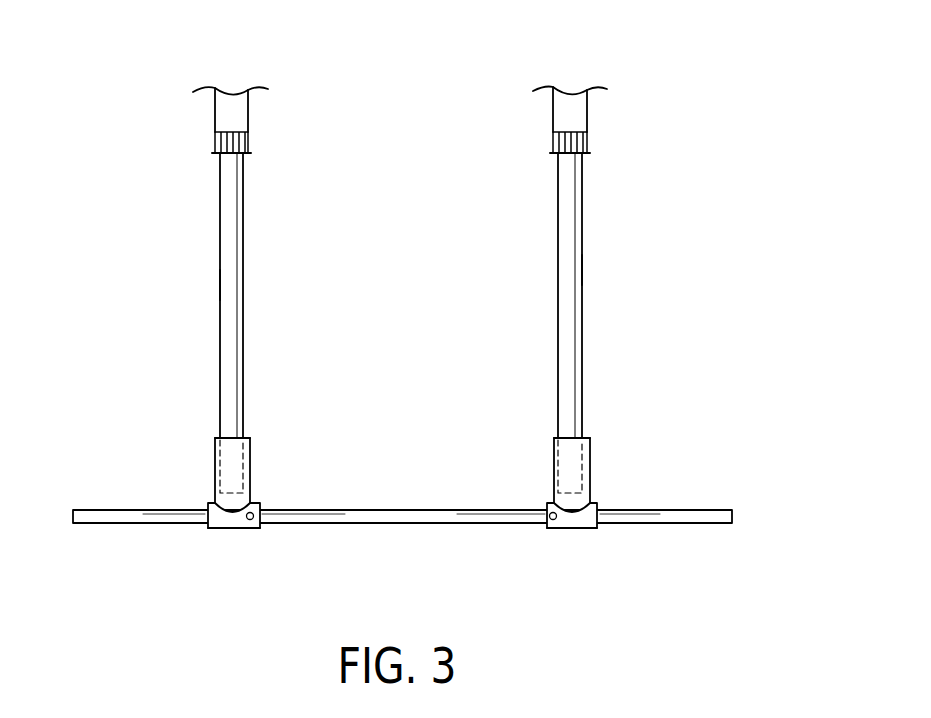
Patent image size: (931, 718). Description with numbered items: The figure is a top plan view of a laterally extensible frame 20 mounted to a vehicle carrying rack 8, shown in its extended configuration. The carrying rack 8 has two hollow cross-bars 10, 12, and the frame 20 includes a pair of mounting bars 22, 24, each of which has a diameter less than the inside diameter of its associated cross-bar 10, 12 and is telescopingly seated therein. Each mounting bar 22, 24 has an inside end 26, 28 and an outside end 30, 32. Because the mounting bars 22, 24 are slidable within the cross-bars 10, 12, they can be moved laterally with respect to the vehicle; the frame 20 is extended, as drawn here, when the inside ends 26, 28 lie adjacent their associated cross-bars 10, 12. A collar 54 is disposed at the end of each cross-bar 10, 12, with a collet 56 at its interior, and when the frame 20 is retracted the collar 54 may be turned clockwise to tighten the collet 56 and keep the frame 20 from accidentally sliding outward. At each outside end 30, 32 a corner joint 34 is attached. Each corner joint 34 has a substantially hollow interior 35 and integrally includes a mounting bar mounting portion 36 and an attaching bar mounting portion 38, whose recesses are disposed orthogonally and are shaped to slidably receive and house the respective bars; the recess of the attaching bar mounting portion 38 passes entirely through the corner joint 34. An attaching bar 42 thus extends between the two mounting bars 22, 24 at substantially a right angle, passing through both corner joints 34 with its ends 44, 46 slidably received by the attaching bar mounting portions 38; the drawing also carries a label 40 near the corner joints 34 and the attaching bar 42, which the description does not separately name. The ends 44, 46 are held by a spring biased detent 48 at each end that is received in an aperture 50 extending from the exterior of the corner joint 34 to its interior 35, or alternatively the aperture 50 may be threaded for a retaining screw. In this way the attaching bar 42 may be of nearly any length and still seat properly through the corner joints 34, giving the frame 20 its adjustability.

The carrying rack 8 is at (577, 93).
The cross-bar 10 is at (215, 112).
The cross-bar 12 is at (588, 117).
The frame 20 is at (436, 445).
The mounting bar 22 is at (220, 283).
The mounting bar 24 is at (583, 268).
The inside end 26 is at (220, 180).
The inside end 28 is at (583, 229).
The outside end 30 is at (230, 462).
The outside end 32 is at (572, 460).
The corner joint 34 is at (245, 528).
The hollow interior 35 is at (232, 490).
The mounting bar mounting portion 36 is at (215, 452).
The attaching bar mounting portion 38 is at (228, 522).
The rail end portion 40 is at (212, 514).
The attaching bar 42 is at (408, 523).
The end 44 is at (322, 524).
The end 46 is at (531, 524).
The spring biased detent 48 is at (553, 521).
The aperture 50 is at (254, 521).
The collar 54 is at (225, 140).
The collet 56 is at (216, 157).